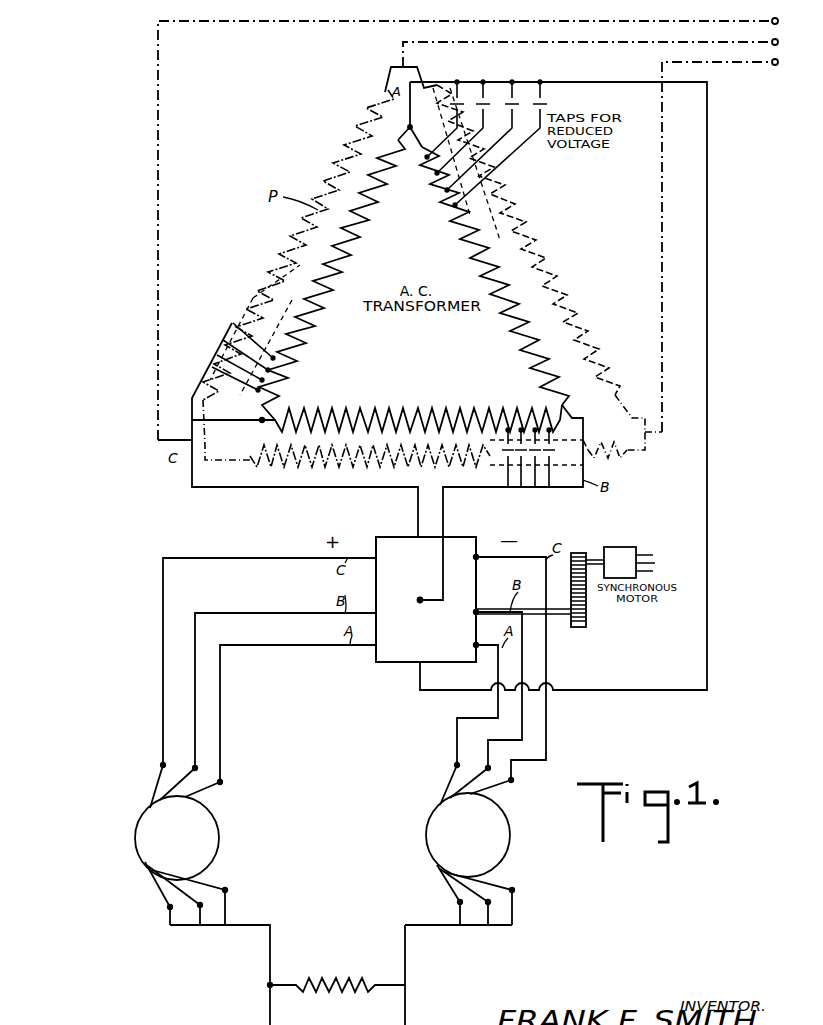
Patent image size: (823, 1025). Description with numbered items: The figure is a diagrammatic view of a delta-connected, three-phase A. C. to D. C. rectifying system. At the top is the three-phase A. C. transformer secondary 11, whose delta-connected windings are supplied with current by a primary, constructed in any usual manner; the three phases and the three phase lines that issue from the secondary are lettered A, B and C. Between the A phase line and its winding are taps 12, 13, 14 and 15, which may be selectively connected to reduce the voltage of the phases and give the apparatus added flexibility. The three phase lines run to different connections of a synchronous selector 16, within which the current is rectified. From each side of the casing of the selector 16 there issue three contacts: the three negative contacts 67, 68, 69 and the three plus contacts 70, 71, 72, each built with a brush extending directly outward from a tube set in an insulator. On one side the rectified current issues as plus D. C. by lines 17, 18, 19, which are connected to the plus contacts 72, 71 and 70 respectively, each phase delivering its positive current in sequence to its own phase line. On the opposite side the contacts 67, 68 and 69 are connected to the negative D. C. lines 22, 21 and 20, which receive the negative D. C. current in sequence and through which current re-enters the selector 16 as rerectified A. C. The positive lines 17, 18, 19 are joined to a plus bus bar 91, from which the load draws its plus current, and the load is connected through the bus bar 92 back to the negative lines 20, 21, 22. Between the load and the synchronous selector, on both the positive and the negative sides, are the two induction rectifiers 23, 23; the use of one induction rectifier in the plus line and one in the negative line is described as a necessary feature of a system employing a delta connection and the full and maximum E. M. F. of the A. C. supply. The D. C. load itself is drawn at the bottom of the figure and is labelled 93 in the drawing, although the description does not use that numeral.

The three-phase A. C. transformer secondary 11 is at (368, 236).
The tap 12 is at (457, 82).
The tap 13 is at (483, 82).
The tap 14 is at (512, 82).
The tap 15 is at (540, 82).
The synchronous selector 16 is at (402, 530).
The plus D. C. line 17 is at (285, 558).
The plus D. C. line 18 is at (285, 613).
The plus D. C. line 19 is at (285, 645).
The negative D. C. line 20 is at (515, 557).
The negative D. C. line 21 is at (486, 612).
The negative D. C. line 22 is at (490, 645).
The induction rectifier 23 is at (224, 814).
The negative contact 67 is at (476, 645).
The negative contact 68 is at (478, 612).
The negative contact 69 is at (476, 557).
The plus contact 70 is at (374, 650).
The plus contact 71 is at (374, 611).
The plus contact 72 is at (374, 560).
The plus bus bar 91 is at (233, 925).
The bus bar 92 is at (423, 925).
The D.C. load 93 is at (332, 982).